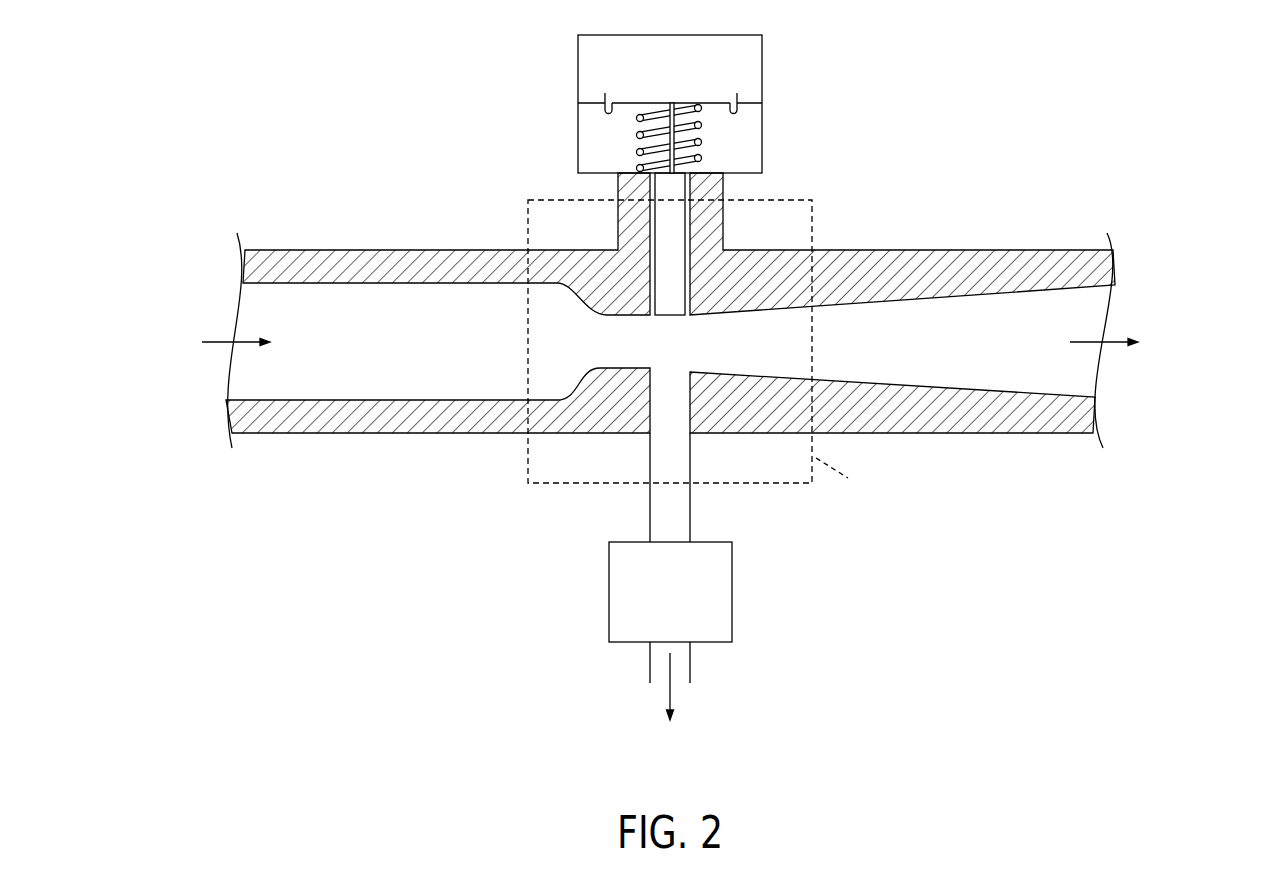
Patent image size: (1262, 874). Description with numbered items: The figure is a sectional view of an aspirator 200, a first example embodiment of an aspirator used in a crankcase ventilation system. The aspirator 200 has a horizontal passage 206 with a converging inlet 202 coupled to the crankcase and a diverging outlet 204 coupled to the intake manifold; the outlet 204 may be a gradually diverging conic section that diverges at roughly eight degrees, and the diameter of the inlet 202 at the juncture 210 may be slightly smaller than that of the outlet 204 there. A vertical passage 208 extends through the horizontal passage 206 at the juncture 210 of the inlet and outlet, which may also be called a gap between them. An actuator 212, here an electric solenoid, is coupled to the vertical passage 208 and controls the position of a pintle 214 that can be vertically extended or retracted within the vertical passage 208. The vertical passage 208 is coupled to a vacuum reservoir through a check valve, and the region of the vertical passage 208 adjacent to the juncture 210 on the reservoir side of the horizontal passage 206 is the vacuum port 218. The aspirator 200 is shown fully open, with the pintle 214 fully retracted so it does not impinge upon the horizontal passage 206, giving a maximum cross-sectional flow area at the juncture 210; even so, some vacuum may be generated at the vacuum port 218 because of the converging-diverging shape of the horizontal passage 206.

The aspirator 200 is at (662, 413).
The converging inlet 202 is at (388, 276).
The diverging outlet 204 is at (950, 290).
The horizontal passage 206 is at (410, 345).
The vertical passage 208 is at (684, 447).
The juncture 210 is at (672, 352).
The actuator 212 is at (762, 68).
The pintle 214 is at (655, 243).
The vacuum port 218 is at (660, 380).